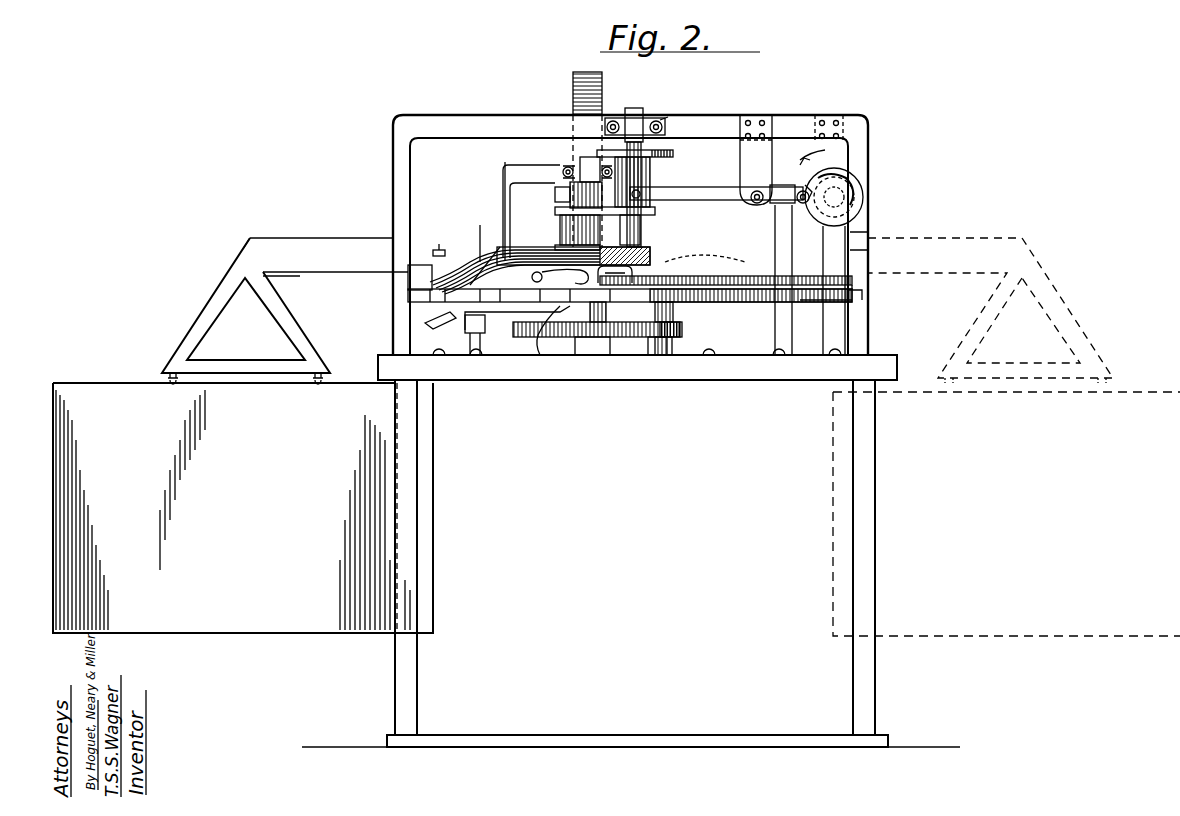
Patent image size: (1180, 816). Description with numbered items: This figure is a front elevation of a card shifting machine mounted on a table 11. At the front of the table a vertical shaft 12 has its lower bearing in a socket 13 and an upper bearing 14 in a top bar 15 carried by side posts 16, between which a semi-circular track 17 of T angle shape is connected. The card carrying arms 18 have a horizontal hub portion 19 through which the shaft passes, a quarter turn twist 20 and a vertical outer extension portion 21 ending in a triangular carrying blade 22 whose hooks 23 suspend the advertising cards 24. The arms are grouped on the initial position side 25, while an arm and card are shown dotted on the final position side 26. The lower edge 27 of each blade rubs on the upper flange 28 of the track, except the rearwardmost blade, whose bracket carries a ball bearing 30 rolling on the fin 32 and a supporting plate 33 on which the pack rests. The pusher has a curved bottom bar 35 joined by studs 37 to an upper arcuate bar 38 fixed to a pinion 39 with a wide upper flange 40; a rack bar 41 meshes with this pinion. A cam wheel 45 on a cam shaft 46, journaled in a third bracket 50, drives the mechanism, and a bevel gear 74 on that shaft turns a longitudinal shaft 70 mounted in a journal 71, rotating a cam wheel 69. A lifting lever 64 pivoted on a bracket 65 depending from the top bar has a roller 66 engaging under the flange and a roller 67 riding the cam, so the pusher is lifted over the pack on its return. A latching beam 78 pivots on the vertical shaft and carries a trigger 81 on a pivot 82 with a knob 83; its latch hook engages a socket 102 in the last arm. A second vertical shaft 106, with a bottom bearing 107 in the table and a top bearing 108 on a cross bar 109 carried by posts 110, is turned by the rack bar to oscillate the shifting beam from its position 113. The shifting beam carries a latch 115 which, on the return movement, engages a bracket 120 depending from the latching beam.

The table 11 is at (550, 389).
The vertical shaft 12 is at (640, 125).
The socket 13 is at (632, 358).
The upper bearing 14 is at (660, 120).
The top bar 15 is at (735, 122).
The side posts 16 is at (393, 182).
The semi-circular track 17 is at (805, 302).
The arms 18 is at (301, 242).
The hub portion 19 is at (650, 255).
The quarter turn twist 20 is at (470, 233).
The outer extension portion 21 is at (257, 236).
The triangular carrying blade 22 is at (208, 303).
The hooks 23 is at (168, 381).
The advertising cards 24 is at (330, 622).
The initial position side 25 is at (357, 346).
The final position side 26 is at (940, 665).
The lower edge 27 is at (368, 276).
The upper flange 28 is at (738, 278).
The ball bearing 30 is at (406, 284).
The fin 32 is at (855, 286).
The supporting plate 33 is at (418, 265).
The curved bottom bar 35 is at (557, 246).
The studs 37 is at (560, 219).
The upper arcuate bar 38 is at (562, 210).
The pinion 39 is at (585, 190).
The upper flange 40 is at (630, 152).
The rack bar 41 is at (668, 180).
The cam wheel 45 is at (573, 80).
The cam shaft 46 is at (555, 195).
The third bracket 50 is at (780, 356).
The lifting lever 64 is at (700, 197).
The bracket 65 is at (765, 166).
The roller 66 is at (628, 214).
The roller 67 is at (812, 235).
The cam wheel 69 is at (838, 172).
The longitudinal shaft 70 is at (860, 195).
The journal 71 is at (850, 188).
The bevel gear 74 is at (810, 160).
The latching beam 78 is at (605, 282).
The trigger 81 is at (556, 310).
The pivot 82 is at (497, 265).
The knob 83 is at (545, 275).
The socket 102 is at (439, 246).
The vertical shaft 106 is at (526, 189).
The bottom bearing 107 is at (588, 358).
The top bearing 108 is at (582, 160).
The cross bar 109 is at (505, 172).
The posts 110 is at (700, 256).
The position 113 is at (570, 338).
The latch 115 is at (445, 325).
The bracket 120 is at (517, 330).